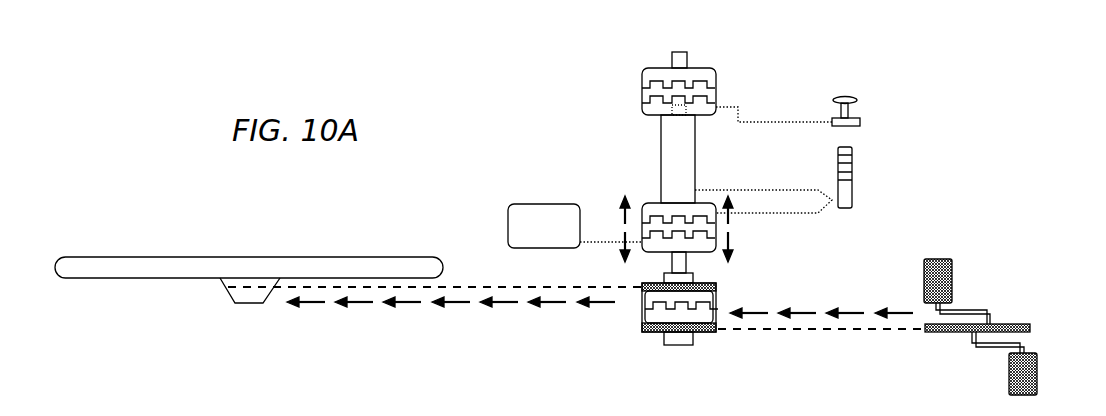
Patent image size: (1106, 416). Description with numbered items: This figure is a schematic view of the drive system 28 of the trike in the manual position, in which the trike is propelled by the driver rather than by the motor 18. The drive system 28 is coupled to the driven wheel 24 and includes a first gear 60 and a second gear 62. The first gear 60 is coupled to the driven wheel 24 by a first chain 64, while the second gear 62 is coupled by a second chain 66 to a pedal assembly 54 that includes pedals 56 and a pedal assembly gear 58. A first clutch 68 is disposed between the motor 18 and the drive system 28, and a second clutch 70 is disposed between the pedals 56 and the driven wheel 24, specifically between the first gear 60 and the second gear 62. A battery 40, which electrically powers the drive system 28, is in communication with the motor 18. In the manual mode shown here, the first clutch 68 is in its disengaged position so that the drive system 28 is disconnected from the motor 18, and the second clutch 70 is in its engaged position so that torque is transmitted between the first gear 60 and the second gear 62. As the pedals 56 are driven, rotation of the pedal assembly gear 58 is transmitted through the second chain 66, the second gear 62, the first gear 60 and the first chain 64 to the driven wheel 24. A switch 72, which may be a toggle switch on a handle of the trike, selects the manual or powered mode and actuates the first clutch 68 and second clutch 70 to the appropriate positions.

The motor 18 is at (660, 140).
The driven wheel 24 is at (120, 258).
The drive system 28 is at (910, 143).
The battery 40 is at (522, 203).
The pedal assembly 54 is at (987, 279).
The pedals 56 is at (940, 258).
The pedal assembly gear 58 is at (1020, 322).
The first gear 60 is at (712, 289).
The second gear 62 is at (648, 331).
The first chain 64 is at (472, 284).
The second chain 66 is at (825, 337).
The first clutch 68 is at (740, 228).
The second clutch 70 is at (630, 313).
The switch 72 is at (853, 167).